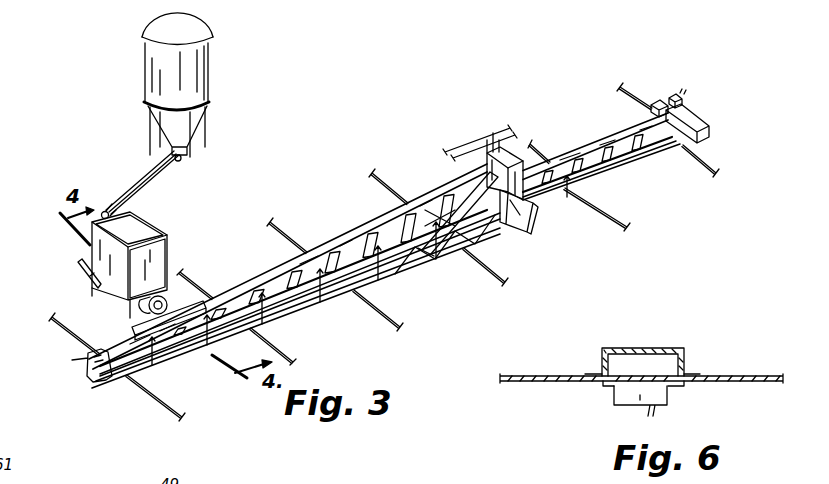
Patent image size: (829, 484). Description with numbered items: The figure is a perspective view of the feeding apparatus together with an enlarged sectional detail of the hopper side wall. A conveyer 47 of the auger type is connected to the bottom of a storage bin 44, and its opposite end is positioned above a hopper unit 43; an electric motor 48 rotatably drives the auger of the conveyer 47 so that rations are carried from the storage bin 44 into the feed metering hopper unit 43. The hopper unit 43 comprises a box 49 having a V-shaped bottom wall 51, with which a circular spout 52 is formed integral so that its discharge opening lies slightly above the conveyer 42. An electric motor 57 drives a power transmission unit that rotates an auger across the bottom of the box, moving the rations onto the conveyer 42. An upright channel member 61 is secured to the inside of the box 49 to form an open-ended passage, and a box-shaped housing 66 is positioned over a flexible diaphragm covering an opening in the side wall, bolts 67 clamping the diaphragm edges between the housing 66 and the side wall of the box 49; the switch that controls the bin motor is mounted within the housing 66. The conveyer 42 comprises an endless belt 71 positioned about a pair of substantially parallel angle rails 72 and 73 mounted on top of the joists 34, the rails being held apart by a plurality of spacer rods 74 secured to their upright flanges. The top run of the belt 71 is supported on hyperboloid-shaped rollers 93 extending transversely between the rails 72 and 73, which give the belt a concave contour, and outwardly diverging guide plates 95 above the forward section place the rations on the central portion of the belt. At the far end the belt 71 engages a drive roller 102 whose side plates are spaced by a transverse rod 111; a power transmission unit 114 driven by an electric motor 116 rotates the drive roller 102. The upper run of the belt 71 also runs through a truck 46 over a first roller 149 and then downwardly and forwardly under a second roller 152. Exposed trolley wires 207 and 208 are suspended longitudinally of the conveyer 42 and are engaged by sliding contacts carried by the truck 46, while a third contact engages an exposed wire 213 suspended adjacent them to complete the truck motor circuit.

In FIG. 3, the storage bin 44 is at (209, 61).
In FIG. 3, the conveyer 47 is at (160, 181).
In FIG. 3, the electric motor 48 is at (100, 209).
In FIG. 3, the hopper unit 43 is at (159, 218).
In FIG. 3, the box 49 is at (160, 256).
In FIG. 6, the box 49 is at (520, 376).
In FIG. 3, the electric motor 57 is at (80, 262).
In FIG. 3, the V-shaped bottom wall 51 is at (143, 303).
In FIG. 3, the guide plates 95 is at (143, 327).
In FIG. 3, the circular spout 52 is at (187, 273).
In FIG. 3, the conveyer 42 is at (317, 220).
In FIG. 3, the endless belt 71 is at (352, 240).
In FIG. 3, the angle rail 72 is at (388, 262).
In FIG. 3, the hyperboloid-shaped rollers 93 is at (350, 276).
In FIG. 3, the angle rail 73 is at (417, 248).
In FIG. 3, the spacer rods 74 is at (321, 291).
In FIG. 3, the second roller 152 is at (480, 228).
In FIG. 3, the first roller 149 is at (483, 173).
In FIG. 3, the truck 46 is at (528, 148).
In FIG. 3, the trolley wire 207 is at (485, 140).
In FIG. 3, the trolley wire 208 is at (491, 148).
In FIG. 3, the exposed wire 213 is at (497, 140).
In FIG. 3, the drive roller 102 is at (685, 146).
In FIG. 3, the transverse rod 111 is at (692, 118).
In FIG. 3, the power transmission unit 114 is at (658, 103).
In FIG. 3, the electric motor 116 is at (675, 95).
In FIG. 3, the joists 34 is at (288, 352).
In FIG. 6, the channel member 61 is at (660, 348).
In FIG. 6, the bolts 67 is at (600, 385).
In FIG. 6, the housing 66 is at (615, 404).